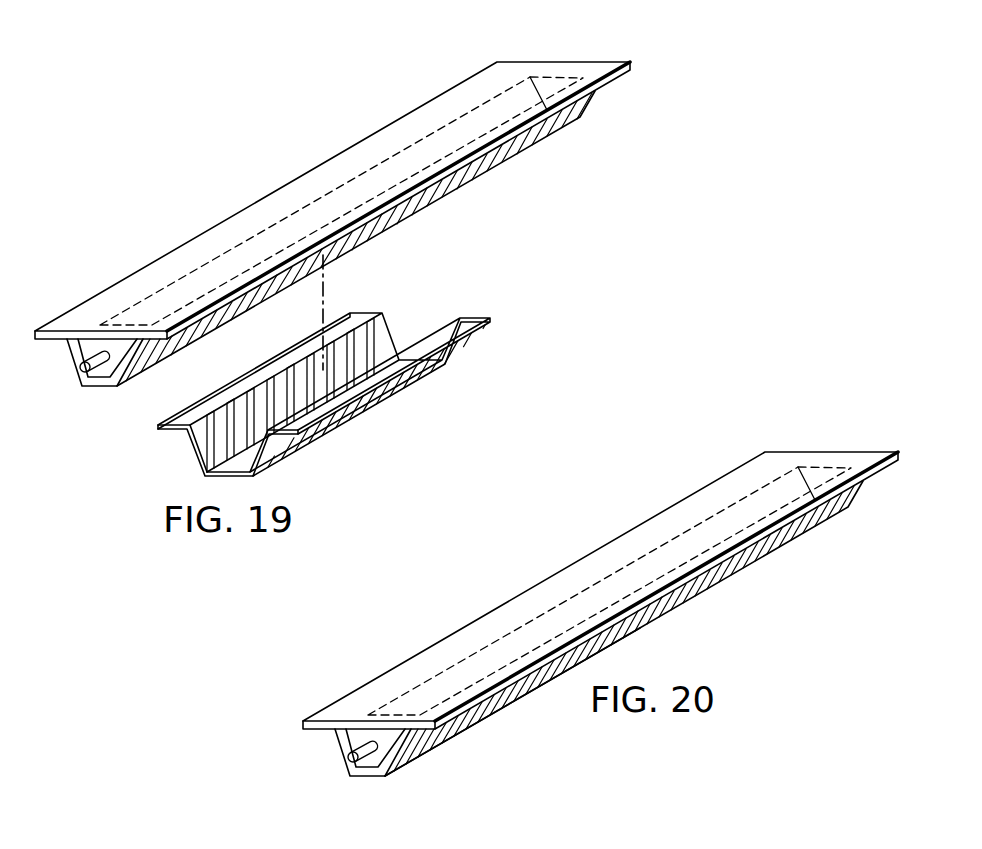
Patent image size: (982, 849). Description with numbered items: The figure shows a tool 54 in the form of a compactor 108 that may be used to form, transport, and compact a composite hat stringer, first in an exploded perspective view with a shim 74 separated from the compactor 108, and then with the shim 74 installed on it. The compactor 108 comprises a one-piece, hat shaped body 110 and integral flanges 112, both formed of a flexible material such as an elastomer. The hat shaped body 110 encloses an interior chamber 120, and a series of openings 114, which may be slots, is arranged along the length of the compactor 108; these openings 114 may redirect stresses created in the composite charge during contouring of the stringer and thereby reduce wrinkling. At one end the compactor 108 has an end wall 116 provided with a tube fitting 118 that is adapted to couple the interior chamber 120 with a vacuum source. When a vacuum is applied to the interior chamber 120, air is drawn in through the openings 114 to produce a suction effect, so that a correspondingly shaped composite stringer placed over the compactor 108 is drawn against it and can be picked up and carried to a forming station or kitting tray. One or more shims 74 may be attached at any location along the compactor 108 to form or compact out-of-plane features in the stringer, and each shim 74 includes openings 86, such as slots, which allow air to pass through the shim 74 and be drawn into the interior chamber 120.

In FIG. 19, the tool 54 is at (363, 112).
In FIG. 20, the tool 54 is at (631, 503).
In FIG. 19, the shim 74 is at (324, 398).
In FIG. 20, the shim 74 is at (624, 628).
In FIG. 19, the openings 86 is at (303, 445).
In FIG. 20, the openings 86 is at (630, 638).
In FIG. 19, the compactor 108 is at (570, 70).
In FIG. 20, the compactor 108 is at (837, 458).
In FIG. 19, the hat shaped body 110 is at (68, 360).
In FIG. 20, the hat shaped body 110 is at (337, 750).
In FIG. 19, the integral flanges 112 is at (182, 245).
In FIG. 20, the integral flanges 112 is at (452, 632).
In FIG. 19, the openings 114 is at (388, 217).
In FIG. 20, the openings 114 is at (790, 532).
In FIG. 19, the end wall 116 is at (112, 346).
In FIG. 20, the end wall 116 is at (381, 736).
In FIG. 19, the tube fitting 118 is at (83, 373).
In FIG. 20, the tube fitting 118 is at (351, 763).
In FIG. 19, the interior chamber 120 is at (460, 111).
In FIG. 20, the interior chamber 120 is at (728, 502).